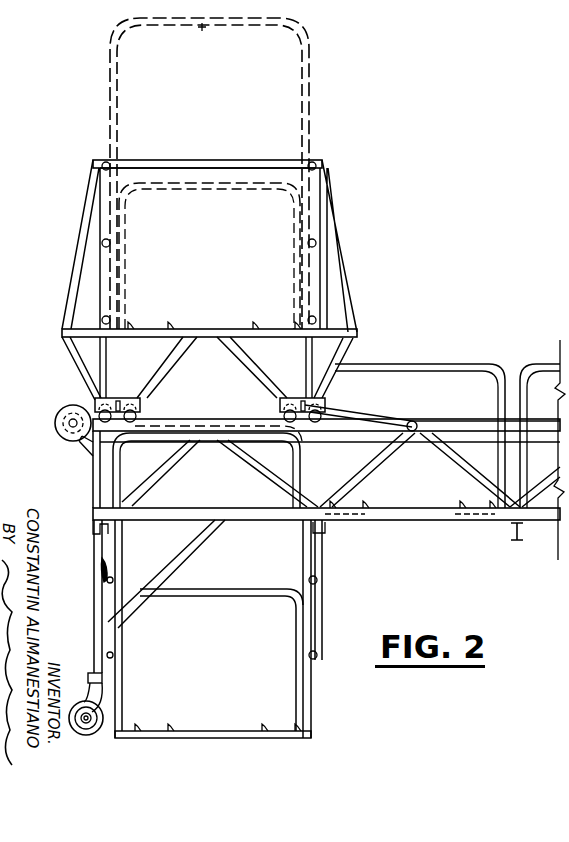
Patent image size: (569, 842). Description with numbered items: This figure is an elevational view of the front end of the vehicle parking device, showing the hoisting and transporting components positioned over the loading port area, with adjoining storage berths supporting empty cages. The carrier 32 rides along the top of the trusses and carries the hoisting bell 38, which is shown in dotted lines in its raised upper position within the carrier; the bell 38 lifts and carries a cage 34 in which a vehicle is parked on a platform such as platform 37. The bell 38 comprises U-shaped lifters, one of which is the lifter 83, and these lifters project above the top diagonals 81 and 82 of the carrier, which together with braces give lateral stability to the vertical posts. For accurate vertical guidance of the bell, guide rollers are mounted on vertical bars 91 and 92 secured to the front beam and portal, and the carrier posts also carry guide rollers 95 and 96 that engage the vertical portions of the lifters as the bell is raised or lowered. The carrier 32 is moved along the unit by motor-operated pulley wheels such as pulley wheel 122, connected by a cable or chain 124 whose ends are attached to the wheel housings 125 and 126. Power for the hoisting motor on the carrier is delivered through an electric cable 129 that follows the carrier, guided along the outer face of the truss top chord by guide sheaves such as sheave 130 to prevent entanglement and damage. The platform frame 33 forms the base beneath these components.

The carrier 32 is at (357, 251).
The platform base assembly 33 is at (60, 460).
The cage 34 is at (207, 211).
The platform 37 is at (203, 730).
The hoisting bell 38 is at (318, 92).
The diagonal 81 is at (227, 167).
The diagonal 82 is at (150, 163).
The U-shaped lifter 83 is at (204, 30).
The vertical bar 91 is at (106, 571).
The vertical bar 92 is at (322, 563).
The guide roller 95 is at (110, 246).
The guide roller 96 is at (309, 246).
The pulley wheel 122 is at (57, 427).
The cable or chain 124 is at (94, 404).
The housing 125 is at (117, 401).
The housing 126 is at (297, 401).
The electric cable 129 is at (342, 415).
The guide sheave 130 is at (412, 433).